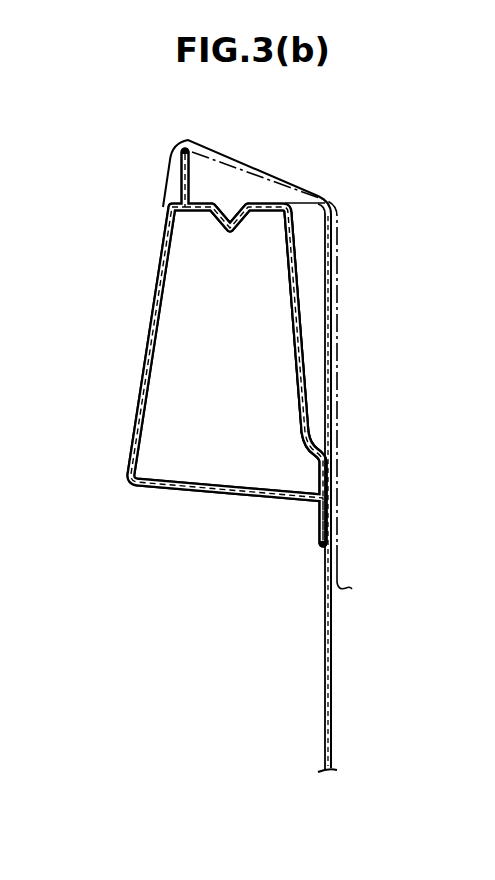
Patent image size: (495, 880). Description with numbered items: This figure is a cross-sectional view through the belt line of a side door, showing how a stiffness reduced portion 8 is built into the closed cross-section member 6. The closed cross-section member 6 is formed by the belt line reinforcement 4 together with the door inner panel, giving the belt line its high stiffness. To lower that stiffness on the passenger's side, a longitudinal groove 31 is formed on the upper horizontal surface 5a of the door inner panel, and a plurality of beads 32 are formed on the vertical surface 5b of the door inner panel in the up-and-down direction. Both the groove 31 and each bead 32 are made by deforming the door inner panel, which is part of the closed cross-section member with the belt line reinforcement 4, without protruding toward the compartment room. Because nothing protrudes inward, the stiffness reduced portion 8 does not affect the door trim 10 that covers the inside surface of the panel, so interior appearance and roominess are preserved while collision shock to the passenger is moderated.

The belt line reinforcement 4 is at (140, 383).
The upper horizontal surface 5a is at (280, 182).
The vertical surface 5b is at (332, 632).
The closed cross-section member 6 is at (228, 385).
The stiffness reduced portion 8 is at (372, 254).
The door trim 10 is at (338, 482).
The longitudinal groove 31 is at (239, 206).
The bead 32 is at (313, 303).